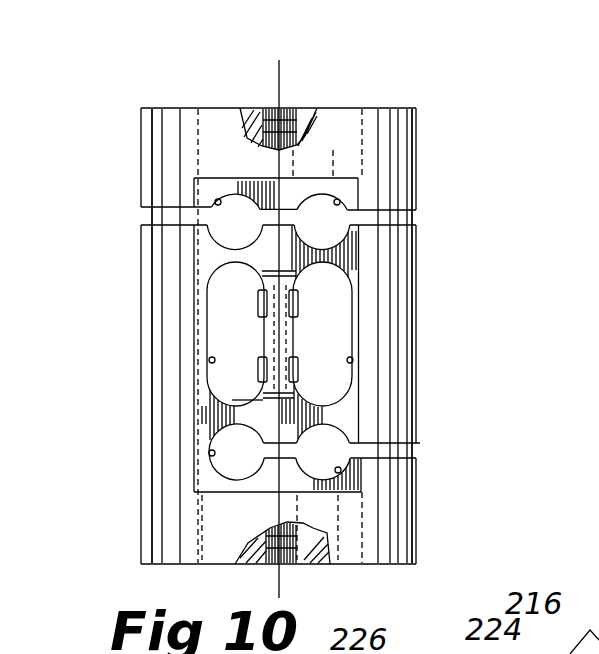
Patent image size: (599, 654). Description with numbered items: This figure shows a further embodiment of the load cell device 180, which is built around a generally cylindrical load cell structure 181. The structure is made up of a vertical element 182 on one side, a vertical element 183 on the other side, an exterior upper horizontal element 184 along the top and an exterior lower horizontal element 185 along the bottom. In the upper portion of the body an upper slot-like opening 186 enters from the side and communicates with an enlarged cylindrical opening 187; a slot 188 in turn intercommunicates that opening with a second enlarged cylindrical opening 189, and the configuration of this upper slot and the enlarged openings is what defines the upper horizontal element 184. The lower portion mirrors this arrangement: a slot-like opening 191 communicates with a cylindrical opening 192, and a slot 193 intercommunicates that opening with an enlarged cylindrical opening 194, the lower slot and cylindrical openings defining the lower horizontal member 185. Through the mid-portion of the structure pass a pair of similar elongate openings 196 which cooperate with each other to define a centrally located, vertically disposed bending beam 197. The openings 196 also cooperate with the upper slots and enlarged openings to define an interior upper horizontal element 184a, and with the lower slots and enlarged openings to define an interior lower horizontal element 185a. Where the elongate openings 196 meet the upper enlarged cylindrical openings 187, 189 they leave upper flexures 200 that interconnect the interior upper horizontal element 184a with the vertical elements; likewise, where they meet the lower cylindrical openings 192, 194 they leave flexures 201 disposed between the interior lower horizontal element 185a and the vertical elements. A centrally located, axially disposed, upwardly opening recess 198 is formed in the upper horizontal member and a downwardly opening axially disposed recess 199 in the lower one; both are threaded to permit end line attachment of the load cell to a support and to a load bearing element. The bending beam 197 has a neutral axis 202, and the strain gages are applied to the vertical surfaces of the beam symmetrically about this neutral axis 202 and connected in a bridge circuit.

The load cell device 180 is at (136, 82).
The load cell structure 181 is at (424, 104).
The vertical element 182 is at (150, 292).
The vertical element 183 is at (418, 290).
The exterior upper horizontal element 184 is at (229, 118).
The interior upper horizontal element 184a is at (289, 257).
The exterior lower horizontal element 185 is at (355, 556).
The interior lower horizontal element 185a is at (275, 418).
The upper slot-like opening 186 is at (141, 221).
The enlarged cylindrical opening 187 is at (215, 202).
The slot 188 is at (293, 221).
The enlarged cylindrical opening 189 is at (340, 202).
The slot-like opening 191 is at (420, 444).
The cylindrical opening 192 is at (340, 469).
The slot 193 is at (268, 448).
The enlarged cylindrical opening 194 is at (212, 453).
The elongate openings 196 is at (210, 361).
The bending beam 197 is at (248, 344).
The upwardly opening recess 198 is at (287, 108).
The downwardly opening recess 199 is at (275, 562).
The upper flexures 200 is at (237, 257).
The flexures 201 is at (222, 417).
The neutral axis 202 is at (278, 108).